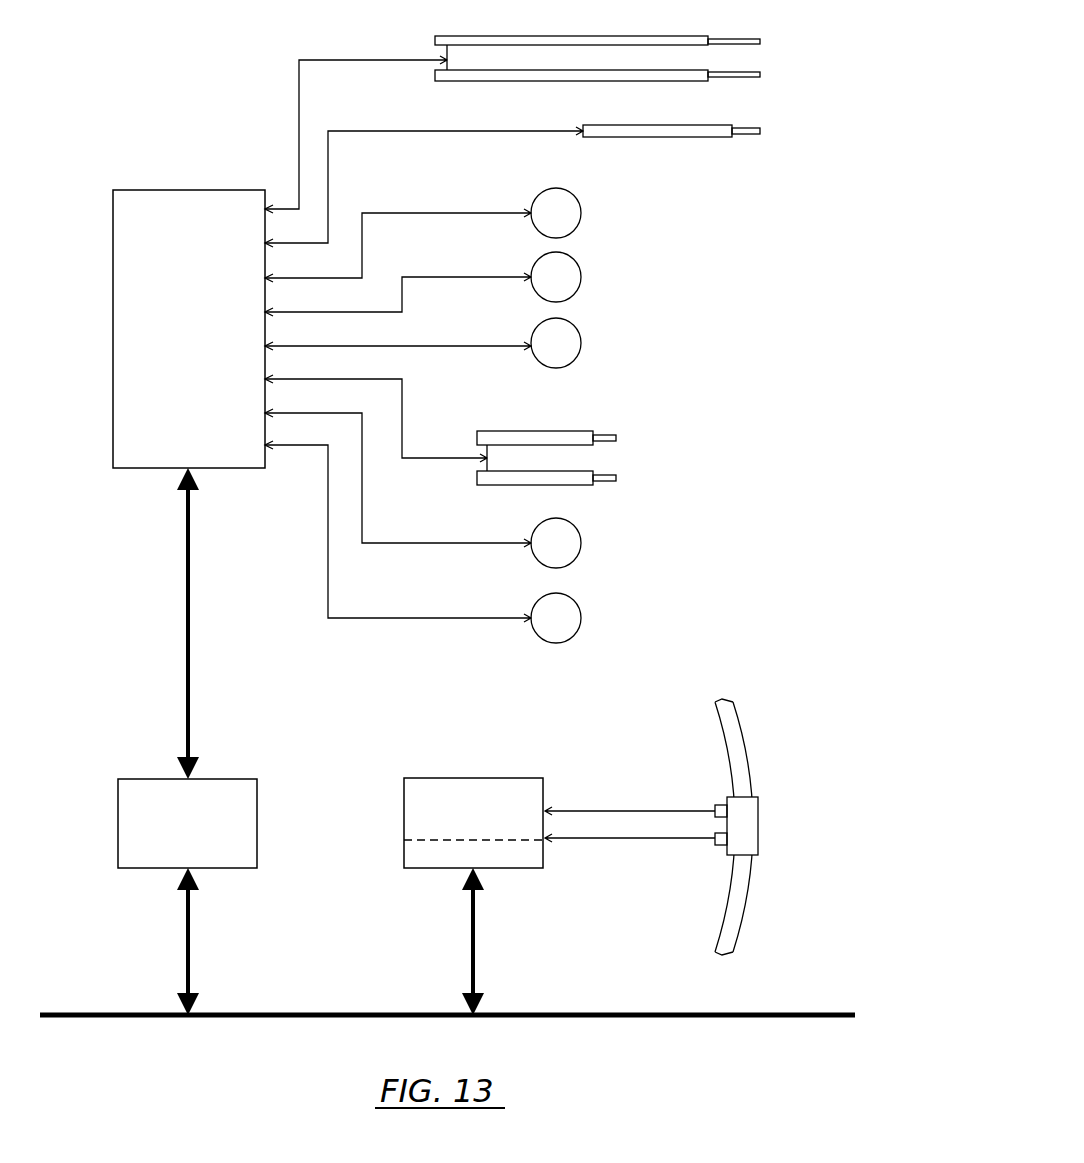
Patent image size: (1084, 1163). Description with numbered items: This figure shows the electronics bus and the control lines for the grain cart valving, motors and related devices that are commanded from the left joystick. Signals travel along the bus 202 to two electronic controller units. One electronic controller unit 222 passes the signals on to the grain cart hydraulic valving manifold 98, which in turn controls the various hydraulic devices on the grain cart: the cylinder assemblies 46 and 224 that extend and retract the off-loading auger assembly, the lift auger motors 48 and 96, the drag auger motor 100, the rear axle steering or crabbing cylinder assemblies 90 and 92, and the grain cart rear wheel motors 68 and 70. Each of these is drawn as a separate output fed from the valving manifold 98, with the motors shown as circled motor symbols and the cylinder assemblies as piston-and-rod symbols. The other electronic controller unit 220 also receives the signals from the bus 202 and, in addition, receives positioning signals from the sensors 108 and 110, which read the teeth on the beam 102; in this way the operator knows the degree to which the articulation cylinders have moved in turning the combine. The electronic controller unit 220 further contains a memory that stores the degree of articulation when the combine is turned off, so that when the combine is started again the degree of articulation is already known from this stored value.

The cylinder assembly 46 is at (688, 77).
The cylinder assembly 224 is at (708, 127).
The hydraulic valving manifold 98 is at (188, 190).
The lift auger motor 48 is at (578, 212).
The lift auger motor 96 is at (578, 276).
The drag auger motor 100 is at (578, 342).
The rear axle steering/crabbing cylinder assembly 90 is at (578, 438).
The rear axle steering/crabbing cylinder assembly 92 is at (585, 477).
The rear wheel motor 68 is at (578, 543).
The rear wheel motor 70 is at (578, 612).
The electronic controller unit 222 is at (224, 779).
The electronic controller unit 220 is at (467, 778).
The beam 102 is at (742, 745).
The sensor 108 is at (722, 805).
The sensor 110 is at (722, 845).
The bus 202 is at (293, 1017).